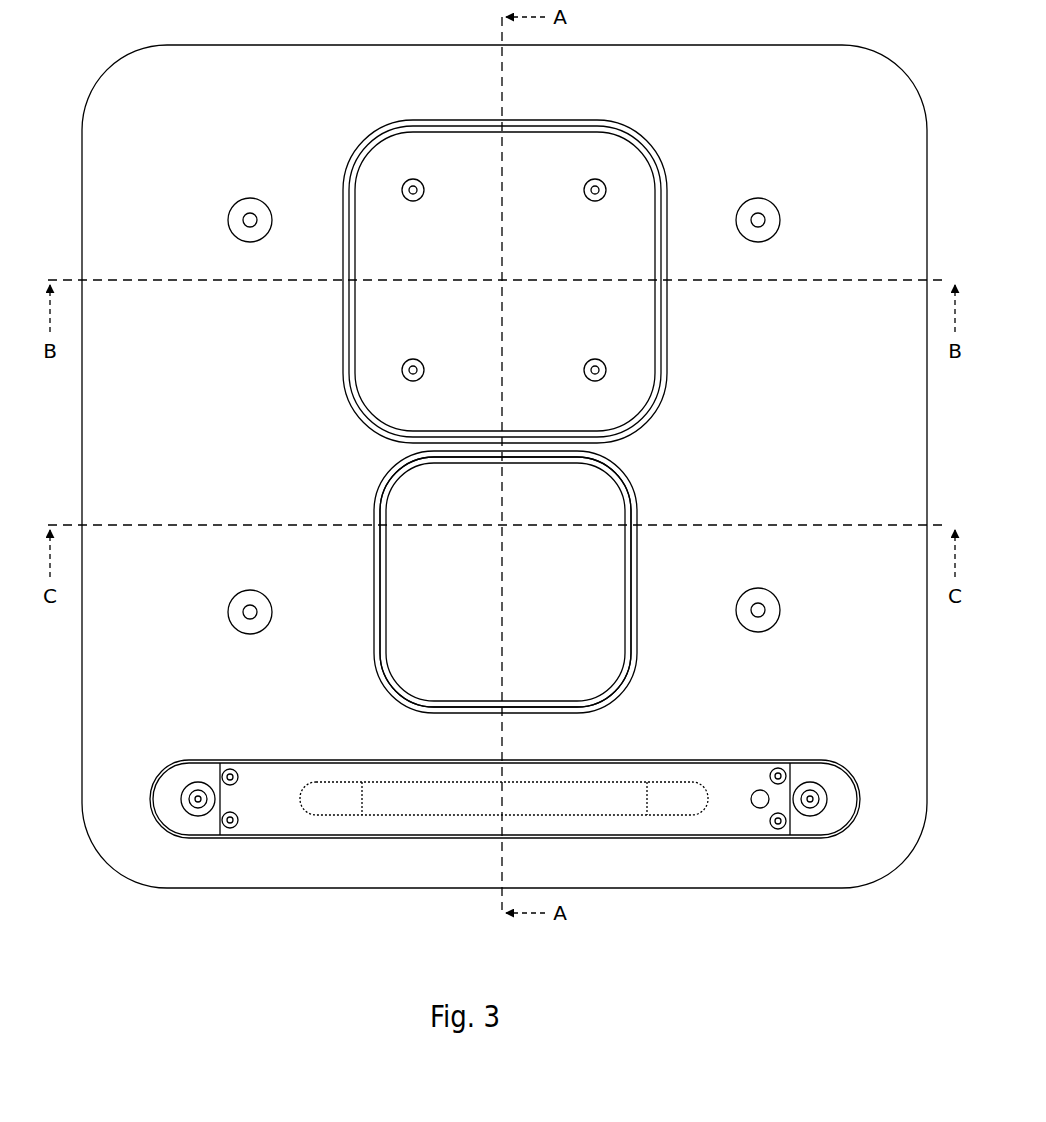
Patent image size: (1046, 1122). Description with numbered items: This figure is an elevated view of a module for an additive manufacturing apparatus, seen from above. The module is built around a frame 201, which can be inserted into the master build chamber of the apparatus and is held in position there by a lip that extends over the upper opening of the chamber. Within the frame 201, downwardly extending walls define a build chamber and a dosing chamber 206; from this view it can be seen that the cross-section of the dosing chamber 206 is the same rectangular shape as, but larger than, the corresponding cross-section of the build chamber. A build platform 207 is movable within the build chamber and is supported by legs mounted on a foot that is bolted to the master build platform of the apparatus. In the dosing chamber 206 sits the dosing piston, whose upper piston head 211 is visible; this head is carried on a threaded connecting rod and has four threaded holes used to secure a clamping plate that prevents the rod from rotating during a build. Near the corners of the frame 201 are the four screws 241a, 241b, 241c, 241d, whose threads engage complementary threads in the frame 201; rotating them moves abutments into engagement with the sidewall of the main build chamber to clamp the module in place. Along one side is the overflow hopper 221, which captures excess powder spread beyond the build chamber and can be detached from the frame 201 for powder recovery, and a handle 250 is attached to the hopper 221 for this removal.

The frame 201 is at (233, 470).
The dosing chamber 206 is at (340, 327).
The build platform 207 is at (461, 577).
The upper piston head 211 is at (466, 252).
The overflow hopper 221 is at (198, 778).
The screw 241a is at (238, 207).
The screw 241b is at (765, 197).
The screw 241c is at (780, 620).
The screw 241d is at (236, 610).
The handle 250 is at (392, 816).